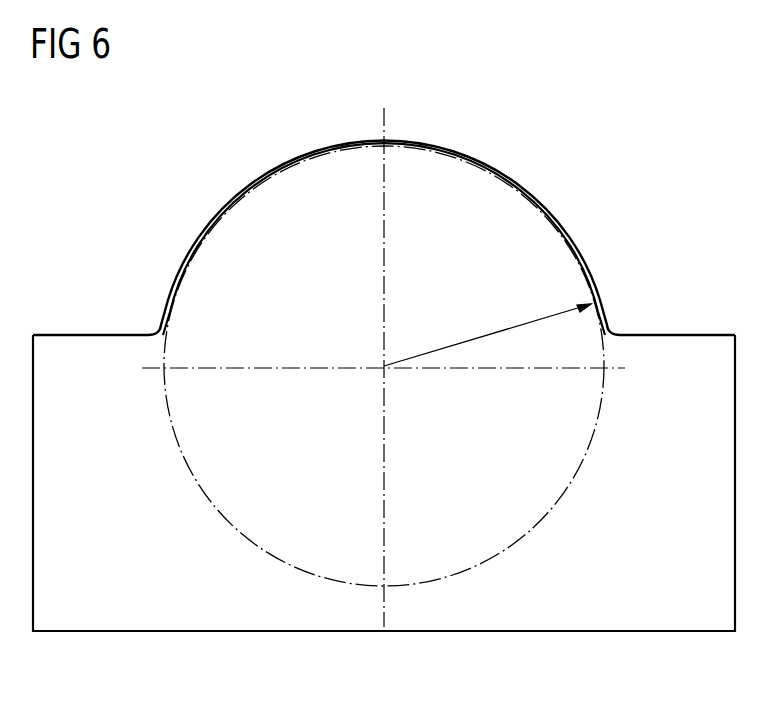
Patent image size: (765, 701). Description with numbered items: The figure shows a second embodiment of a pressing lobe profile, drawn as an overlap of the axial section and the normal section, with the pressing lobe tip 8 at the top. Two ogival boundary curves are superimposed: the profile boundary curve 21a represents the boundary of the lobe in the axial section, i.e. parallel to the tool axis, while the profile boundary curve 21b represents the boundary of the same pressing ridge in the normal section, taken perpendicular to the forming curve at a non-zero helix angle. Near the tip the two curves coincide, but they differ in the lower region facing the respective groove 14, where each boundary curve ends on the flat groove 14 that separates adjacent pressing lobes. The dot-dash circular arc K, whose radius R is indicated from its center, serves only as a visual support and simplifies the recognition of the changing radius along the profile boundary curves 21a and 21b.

The dome-shaped protrusion 8 is at (384, 198).
The groove 14 is at (150, 322).
The profile boundary curve in the axial section 21a is at (565, 230).
The profile boundary curve in the normal section 21b is at (591, 291).
The radius of curvature R is at (510, 328).
The circular arc K is at (582, 462).